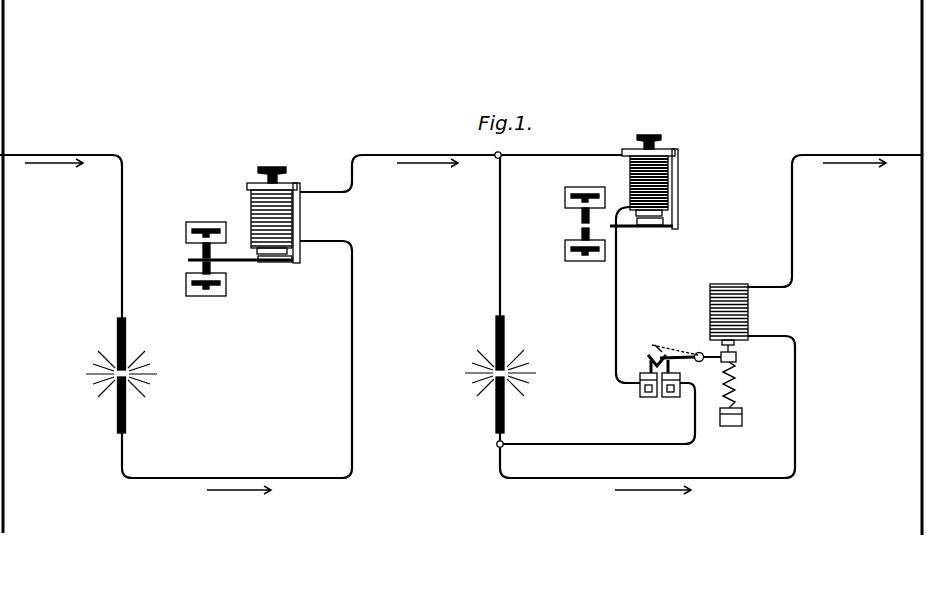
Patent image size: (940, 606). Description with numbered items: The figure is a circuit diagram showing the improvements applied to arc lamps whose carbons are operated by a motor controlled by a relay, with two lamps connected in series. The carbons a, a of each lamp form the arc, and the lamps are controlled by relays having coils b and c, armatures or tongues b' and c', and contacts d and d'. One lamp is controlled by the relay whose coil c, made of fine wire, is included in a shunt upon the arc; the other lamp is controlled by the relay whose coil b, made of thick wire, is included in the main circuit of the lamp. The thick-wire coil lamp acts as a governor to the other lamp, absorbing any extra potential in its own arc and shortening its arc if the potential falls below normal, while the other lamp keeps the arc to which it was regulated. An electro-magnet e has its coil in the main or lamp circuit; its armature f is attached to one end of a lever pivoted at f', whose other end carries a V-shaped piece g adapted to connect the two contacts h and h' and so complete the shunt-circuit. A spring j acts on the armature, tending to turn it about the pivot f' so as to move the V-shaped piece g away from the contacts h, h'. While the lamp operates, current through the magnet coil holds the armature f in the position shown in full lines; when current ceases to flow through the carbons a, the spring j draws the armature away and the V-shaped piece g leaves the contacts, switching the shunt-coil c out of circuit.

The carbons a is at (117, 336).
The coil b is at (265, 215).
The armature or tongue b' is at (240, 270).
The coil c is at (642, 182).
The armature or tongue c' is at (641, 234).
The contact d is at (385, 223).
The contact d' is at (381, 262).
The electro-magnet e is at (712, 319).
The armature f is at (729, 356).
The pivot f' is at (682, 348).
The V-shaped piece g is at (672, 350).
The contact h is at (646, 373).
The contact h' is at (683, 378).
The spring j is at (735, 386).